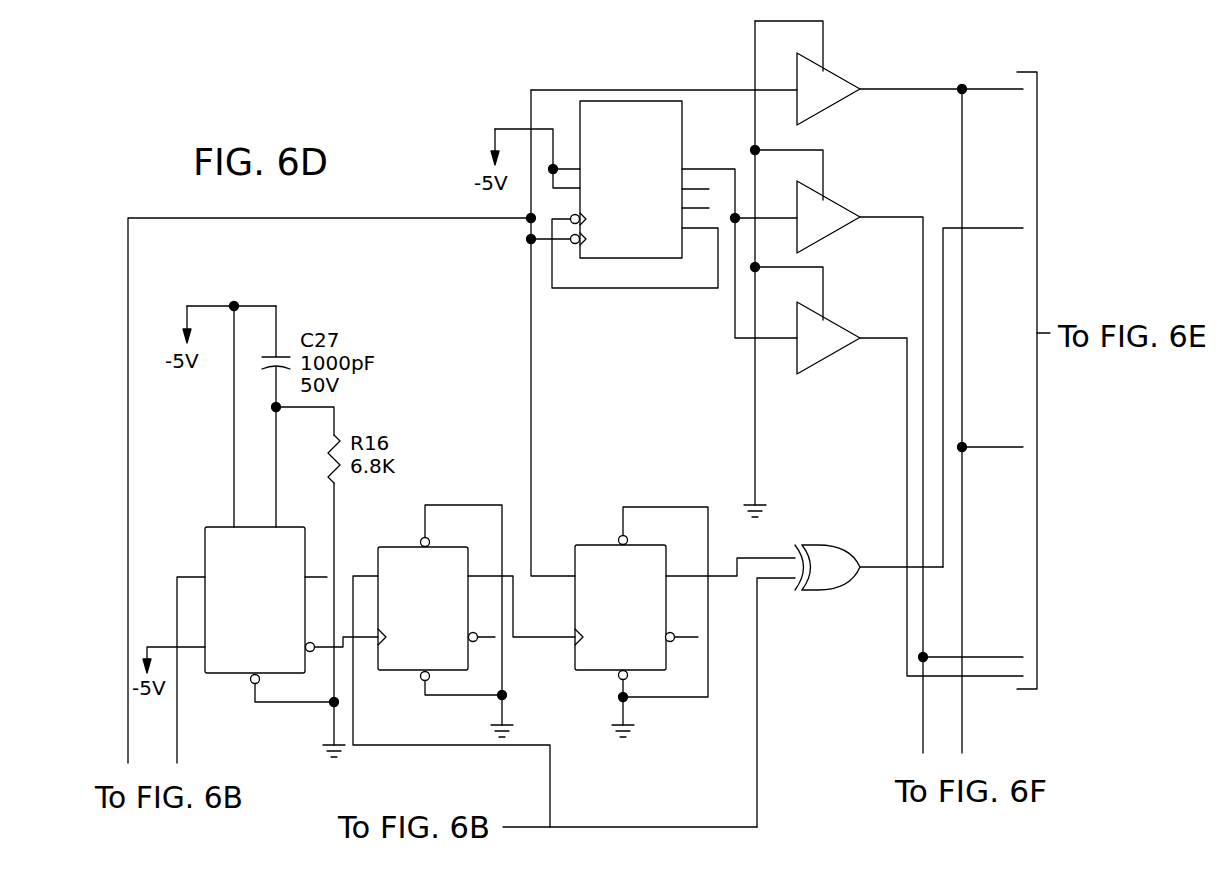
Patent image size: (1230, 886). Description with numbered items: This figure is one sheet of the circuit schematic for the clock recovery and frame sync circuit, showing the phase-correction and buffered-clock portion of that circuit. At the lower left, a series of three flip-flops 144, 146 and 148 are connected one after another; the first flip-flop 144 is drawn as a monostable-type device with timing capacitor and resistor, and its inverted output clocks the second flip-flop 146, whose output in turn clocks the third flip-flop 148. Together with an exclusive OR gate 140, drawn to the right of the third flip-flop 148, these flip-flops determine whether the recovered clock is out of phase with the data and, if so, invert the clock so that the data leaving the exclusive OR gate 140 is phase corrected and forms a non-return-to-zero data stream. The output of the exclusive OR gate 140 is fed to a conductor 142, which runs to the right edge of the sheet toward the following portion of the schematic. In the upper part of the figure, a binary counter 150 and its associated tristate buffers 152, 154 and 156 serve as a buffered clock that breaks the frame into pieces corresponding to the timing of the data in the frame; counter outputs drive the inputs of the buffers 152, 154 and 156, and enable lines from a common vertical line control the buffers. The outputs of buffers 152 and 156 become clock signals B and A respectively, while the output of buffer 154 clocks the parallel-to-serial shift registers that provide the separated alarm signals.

The exclusive OR gate 140 is at (815, 545).
The conductor 142 is at (988, 230).
The flip-flop 144 is at (205, 530).
The flip-flop 146 is at (385, 547).
The flip-flop 148 is at (588, 545).
The binary counter 150 is at (605, 101).
The tristate buffer 152 is at (832, 67).
The tristate buffer 154 is at (832, 196).
The tristate buffer 156 is at (832, 317).